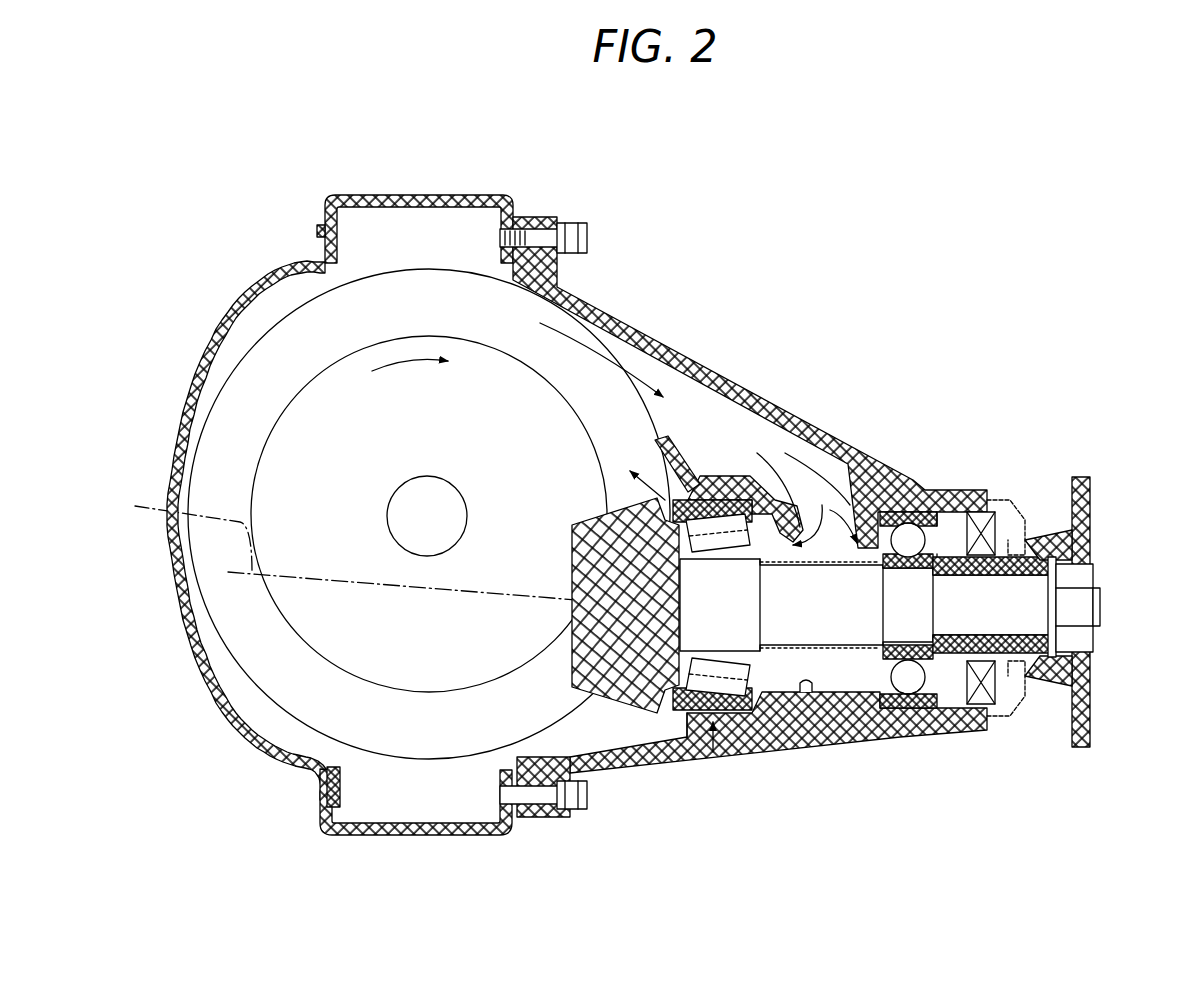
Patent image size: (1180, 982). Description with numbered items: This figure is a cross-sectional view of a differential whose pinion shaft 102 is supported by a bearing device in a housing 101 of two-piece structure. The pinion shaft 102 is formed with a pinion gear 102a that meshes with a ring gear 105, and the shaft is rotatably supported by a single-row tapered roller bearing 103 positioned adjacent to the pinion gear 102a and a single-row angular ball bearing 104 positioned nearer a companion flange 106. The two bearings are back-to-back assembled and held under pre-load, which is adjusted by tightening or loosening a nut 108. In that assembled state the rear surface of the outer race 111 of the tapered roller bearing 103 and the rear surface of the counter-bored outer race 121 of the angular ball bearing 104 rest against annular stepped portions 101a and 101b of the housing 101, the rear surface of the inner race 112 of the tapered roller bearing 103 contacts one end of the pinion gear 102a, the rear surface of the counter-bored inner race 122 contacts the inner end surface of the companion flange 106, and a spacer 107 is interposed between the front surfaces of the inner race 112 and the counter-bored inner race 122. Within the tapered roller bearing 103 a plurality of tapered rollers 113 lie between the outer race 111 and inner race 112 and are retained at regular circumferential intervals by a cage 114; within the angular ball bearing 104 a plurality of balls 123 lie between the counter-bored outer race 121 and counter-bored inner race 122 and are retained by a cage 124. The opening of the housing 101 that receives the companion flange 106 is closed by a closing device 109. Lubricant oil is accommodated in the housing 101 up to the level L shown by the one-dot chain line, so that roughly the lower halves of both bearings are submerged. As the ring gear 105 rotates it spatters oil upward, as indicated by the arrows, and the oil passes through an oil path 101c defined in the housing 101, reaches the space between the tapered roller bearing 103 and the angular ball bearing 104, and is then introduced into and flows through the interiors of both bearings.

The housing 101 is at (666, 346).
The annular stepped portion 101a is at (790, 640).
The annular stepped portion 101b is at (872, 655).
The oil path 101c is at (797, 465).
The pinion shaft 102 is at (797, 740).
The pinion gear 102a is at (615, 687).
The single-row tapered roller bearing 103 is at (710, 780).
The single-row angular ball bearing 104 is at (907, 713).
The ring gear 105 is at (408, 292).
The companion flange 106 is at (1027, 540).
The spacer 107 is at (876, 690).
The nut 108 is at (1097, 647).
The closing device 109 is at (977, 692).
The outer race 111 is at (713, 500).
The inner race 112 is at (713, 560).
The tapered rollers 113 is at (747, 483).
The cage 114 is at (672, 505).
The counter-bored outer race 121 is at (884, 508).
The counter-bored inner race 122 is at (975, 506).
The balls 123 is at (931, 496).
The cage 124 is at (884, 500).
The level L is at (561, 556).